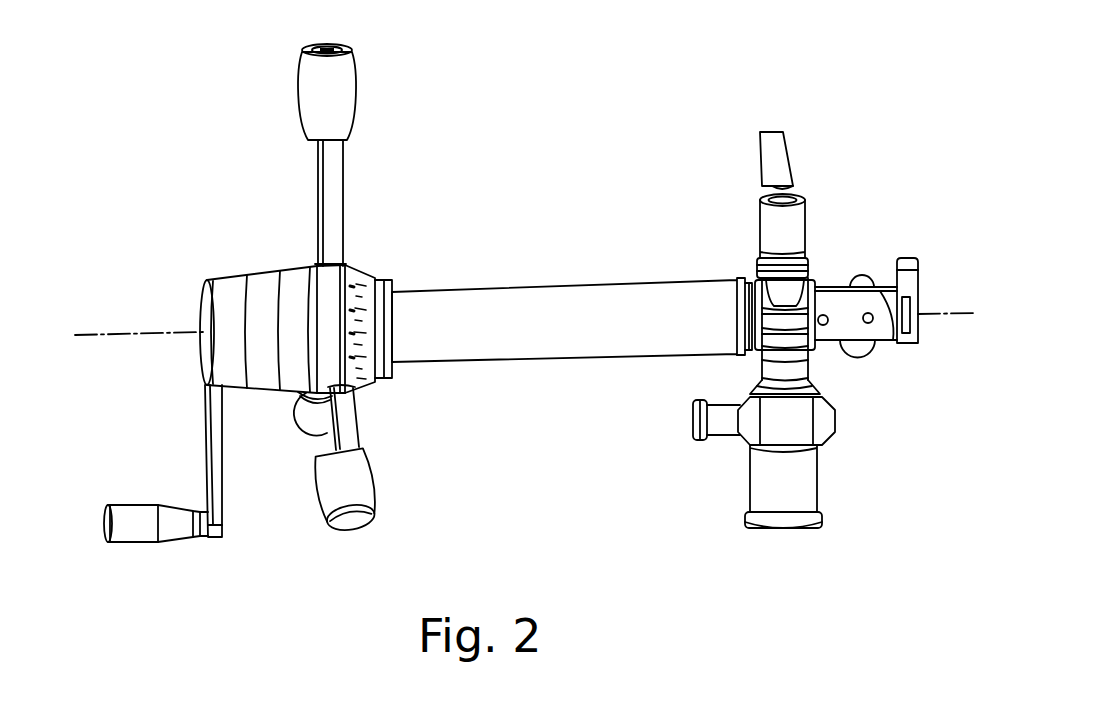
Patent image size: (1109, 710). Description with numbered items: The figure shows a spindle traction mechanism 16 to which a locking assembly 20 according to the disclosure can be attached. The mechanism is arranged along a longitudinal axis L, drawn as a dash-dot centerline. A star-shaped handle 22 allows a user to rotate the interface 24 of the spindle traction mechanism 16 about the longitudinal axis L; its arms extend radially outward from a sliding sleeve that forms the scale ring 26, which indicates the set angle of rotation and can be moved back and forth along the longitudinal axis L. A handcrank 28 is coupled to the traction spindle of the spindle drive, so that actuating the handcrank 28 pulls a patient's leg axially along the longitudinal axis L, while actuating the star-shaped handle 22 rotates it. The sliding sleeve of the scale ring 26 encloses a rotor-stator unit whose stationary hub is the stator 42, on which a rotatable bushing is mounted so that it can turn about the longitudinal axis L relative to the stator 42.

The spindle traction mechanism 16 is at (501, 141).
The locking assembly 20 is at (363, 239).
The star-shaped handle 22 is at (328, 80).
The interface 24 is at (903, 259).
The scale ring 26 is at (375, 278).
The handcrank 28 is at (135, 530).
The stator 42 is at (570, 278).
The longitudinal axis L is at (95, 334).